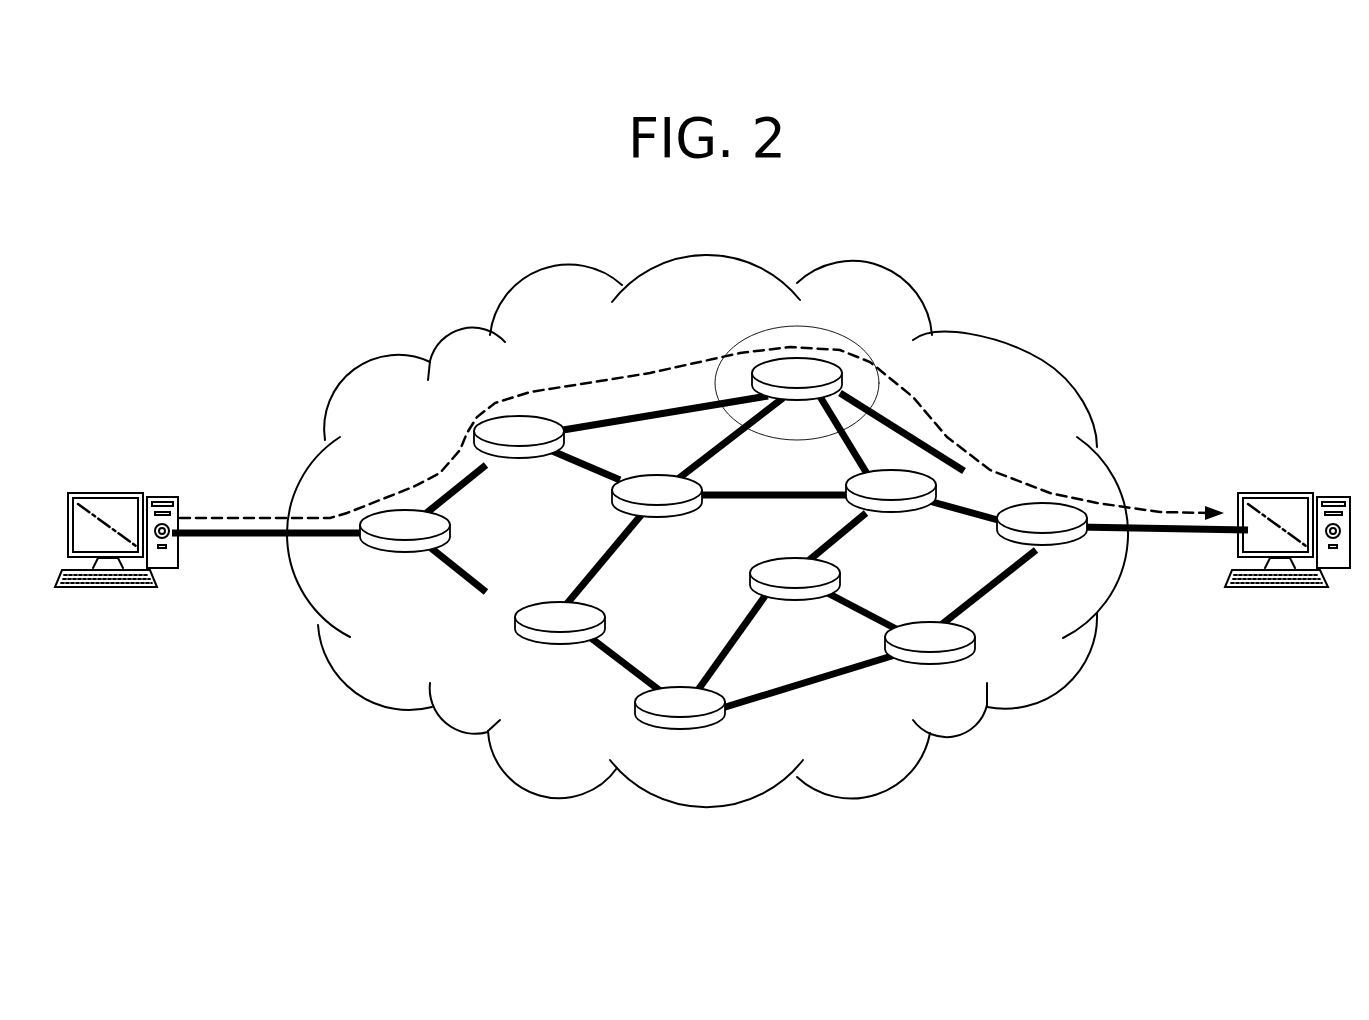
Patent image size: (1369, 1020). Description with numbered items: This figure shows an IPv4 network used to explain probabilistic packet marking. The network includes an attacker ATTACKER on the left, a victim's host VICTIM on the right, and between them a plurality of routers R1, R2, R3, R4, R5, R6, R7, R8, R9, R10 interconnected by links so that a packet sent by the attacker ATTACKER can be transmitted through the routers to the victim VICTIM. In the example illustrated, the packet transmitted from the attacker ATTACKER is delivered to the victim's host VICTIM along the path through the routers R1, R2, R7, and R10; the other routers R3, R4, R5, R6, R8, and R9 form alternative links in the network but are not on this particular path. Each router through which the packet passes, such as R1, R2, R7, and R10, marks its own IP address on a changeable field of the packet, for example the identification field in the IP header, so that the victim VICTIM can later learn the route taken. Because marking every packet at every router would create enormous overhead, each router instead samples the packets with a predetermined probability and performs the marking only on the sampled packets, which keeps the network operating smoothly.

The router R1 is at (405, 553).
The router R2 is at (519, 457).
The router R3 is at (560, 643).
The router R4 is at (657, 479).
The router R5 is at (680, 688).
The router R6 is at (795, 562).
The router R7 is at (797, 383).
The router R8 is at (891, 512).
The router R9 is at (930, 626).
The router R10 is at (1042, 546).
The attacker ATTACKER is at (122, 564).
The victim's host VICTIM is at (1287, 564).